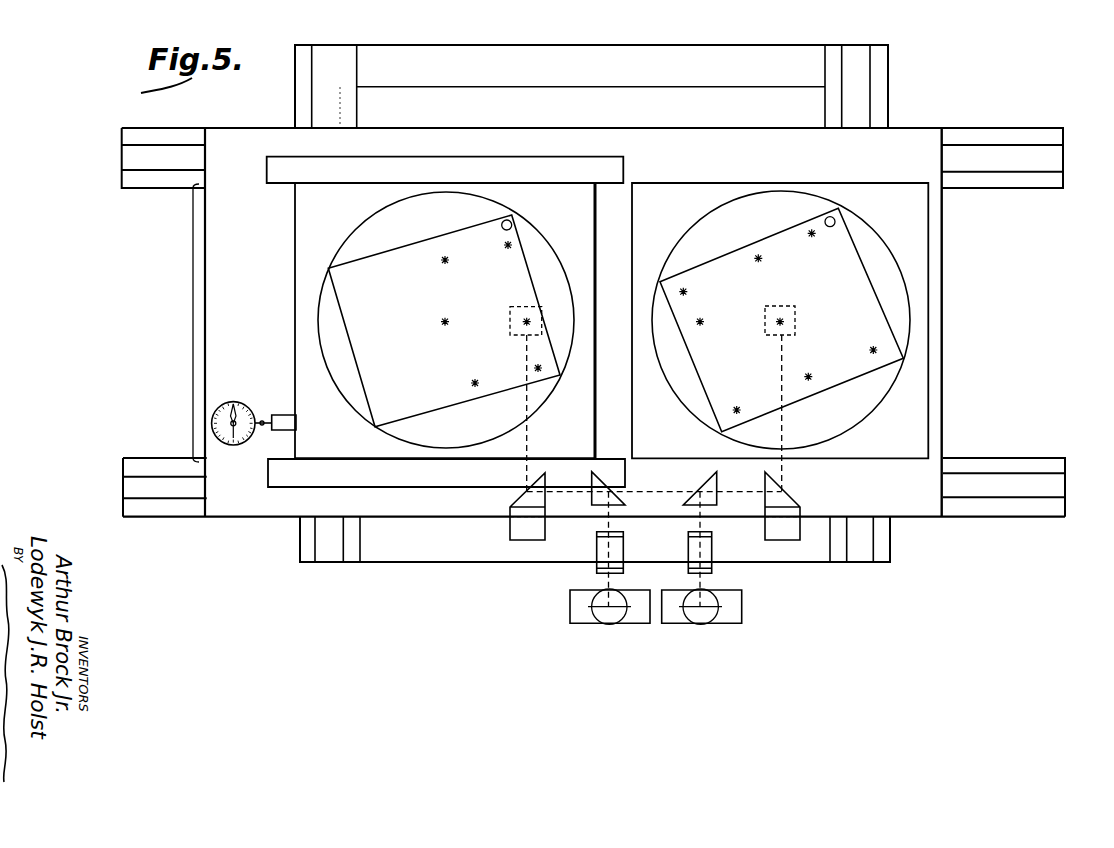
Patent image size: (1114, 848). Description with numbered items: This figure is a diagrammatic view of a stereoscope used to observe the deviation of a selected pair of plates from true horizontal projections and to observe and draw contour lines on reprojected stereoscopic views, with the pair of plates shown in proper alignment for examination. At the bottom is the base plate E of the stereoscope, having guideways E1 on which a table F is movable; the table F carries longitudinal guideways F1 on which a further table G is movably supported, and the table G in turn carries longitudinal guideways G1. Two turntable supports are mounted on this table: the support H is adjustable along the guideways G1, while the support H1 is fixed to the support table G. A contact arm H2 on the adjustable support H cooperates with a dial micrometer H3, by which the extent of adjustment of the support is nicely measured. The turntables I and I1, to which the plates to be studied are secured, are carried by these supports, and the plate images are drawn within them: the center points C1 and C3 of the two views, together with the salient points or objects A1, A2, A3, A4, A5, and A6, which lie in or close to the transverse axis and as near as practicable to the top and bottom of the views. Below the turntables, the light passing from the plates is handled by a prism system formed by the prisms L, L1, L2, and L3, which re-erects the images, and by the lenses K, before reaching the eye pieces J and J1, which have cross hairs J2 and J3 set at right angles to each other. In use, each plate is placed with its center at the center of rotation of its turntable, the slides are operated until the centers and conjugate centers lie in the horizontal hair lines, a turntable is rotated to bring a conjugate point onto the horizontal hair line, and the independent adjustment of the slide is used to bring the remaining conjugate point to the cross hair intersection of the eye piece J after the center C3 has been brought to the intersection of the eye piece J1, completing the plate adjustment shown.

The base plate E is at (412, 56).
The guideways E1 is at (315, 66).
The table F is at (193, 285).
The longitudinal guideways F1 is at (1070, 162).
The table G is at (222, 315).
The longitudinal guideways G1 is at (280, 459).
The turntable support H is at (303, 266).
The turntable support H1 is at (918, 253).
The contact arm H2 is at (282, 415).
The dial micrometer H3 is at (227, 400).
The turntable I is at (370, 228).
The turntable I1 is at (693, 230).
The salient point A1 is at (690, 292).
The salient point A2 is at (745, 410).
The salient point A3 is at (756, 260).
The salient point A4 is at (818, 378).
The salient point A5 is at (809, 235).
The salient point A6 is at (872, 352).
The center point C1 is at (700, 325).
The center point C3 is at (812, 315).
The prism L is at (610, 491).
The prism L1 is at (518, 490).
The prism L2 is at (700, 502).
The prism L3 is at (787, 496).
The lens K is at (605, 545).
The eye piece J is at (618, 622).
The eye piece J1 is at (707, 622).
The cross hairs J2 is at (597, 622).
The cross hairs J3 is at (688, 622).